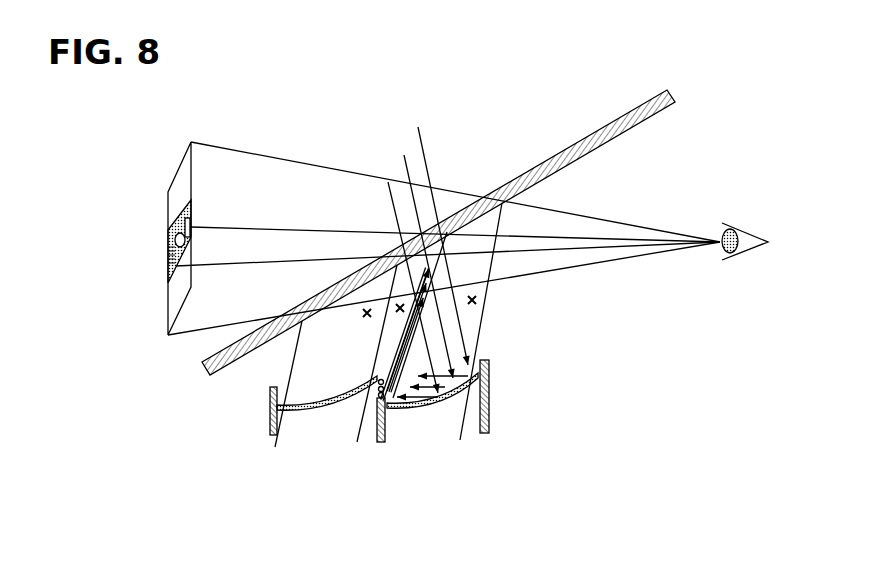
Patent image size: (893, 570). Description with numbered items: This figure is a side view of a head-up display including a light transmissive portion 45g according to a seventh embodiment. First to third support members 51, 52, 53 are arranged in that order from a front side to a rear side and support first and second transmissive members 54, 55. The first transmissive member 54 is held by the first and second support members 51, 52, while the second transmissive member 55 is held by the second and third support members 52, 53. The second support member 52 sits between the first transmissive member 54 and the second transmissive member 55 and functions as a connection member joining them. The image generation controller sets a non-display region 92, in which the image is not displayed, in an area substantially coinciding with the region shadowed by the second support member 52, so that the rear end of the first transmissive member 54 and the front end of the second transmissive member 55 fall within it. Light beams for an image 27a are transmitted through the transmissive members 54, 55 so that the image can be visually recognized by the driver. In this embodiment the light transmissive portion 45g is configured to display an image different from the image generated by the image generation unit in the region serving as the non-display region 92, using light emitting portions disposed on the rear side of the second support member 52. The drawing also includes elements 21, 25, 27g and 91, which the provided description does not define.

The combiner 21 is at (602, 133).
The eye of observer 25 is at (740, 226).
The image 27a is at (184, 193).
The light source 27g is at (158, 246).
The light transmissive portion 45g is at (340, 376).
The first support member 51 is at (270, 410).
The second support member 52 is at (380, 444).
The third support member 53 is at (490, 392).
The first transmissive member 54 is at (318, 411).
The second transmissive member 55 is at (436, 408).
The intermediate image 91 is at (360, 306).
The non-display region 92 is at (402, 290).